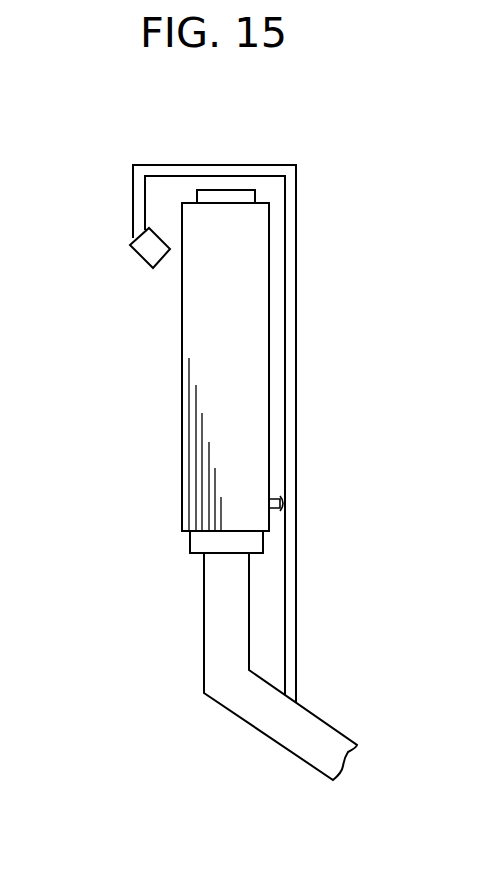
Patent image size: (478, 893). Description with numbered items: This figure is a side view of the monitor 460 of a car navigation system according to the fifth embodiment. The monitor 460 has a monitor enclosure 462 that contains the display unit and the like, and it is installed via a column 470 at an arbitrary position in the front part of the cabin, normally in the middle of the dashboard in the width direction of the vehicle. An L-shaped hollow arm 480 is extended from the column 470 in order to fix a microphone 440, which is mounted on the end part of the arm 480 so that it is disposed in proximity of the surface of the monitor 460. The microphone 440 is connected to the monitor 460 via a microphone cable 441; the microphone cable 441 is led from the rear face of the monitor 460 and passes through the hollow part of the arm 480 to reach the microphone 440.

The microphone 440 is at (136, 257).
The microphone cable 441 is at (281, 501).
The monitor 460 is at (166, 371).
The monitor enclosure 462 is at (182, 432).
The column 470 is at (204, 626).
The L-shaped hollow arm 480 is at (296, 341).